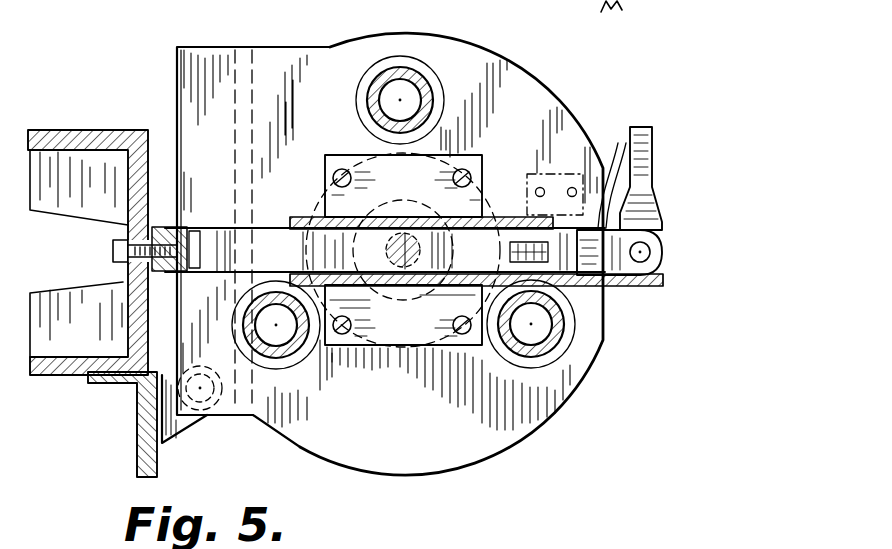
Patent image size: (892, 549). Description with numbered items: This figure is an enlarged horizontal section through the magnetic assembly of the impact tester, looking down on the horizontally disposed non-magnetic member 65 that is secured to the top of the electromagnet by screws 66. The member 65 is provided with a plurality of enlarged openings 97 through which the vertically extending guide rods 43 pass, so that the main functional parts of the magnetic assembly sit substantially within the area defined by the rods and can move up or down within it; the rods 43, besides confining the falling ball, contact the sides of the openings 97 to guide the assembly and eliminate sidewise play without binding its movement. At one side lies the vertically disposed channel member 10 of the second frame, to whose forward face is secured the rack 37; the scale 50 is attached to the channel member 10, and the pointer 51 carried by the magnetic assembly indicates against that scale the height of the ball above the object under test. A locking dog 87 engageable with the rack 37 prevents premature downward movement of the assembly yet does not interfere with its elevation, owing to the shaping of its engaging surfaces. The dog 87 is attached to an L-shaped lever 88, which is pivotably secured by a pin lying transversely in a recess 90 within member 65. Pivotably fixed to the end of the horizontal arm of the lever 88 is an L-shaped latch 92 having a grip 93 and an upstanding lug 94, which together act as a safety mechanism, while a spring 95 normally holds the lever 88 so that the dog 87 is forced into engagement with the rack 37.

The channel member 10 is at (97, 132).
The rack 37 is at (113, 240).
The guide rods 43 is at (413, 73).
The scale 50 is at (158, 468).
The pointer 51 is at (188, 430).
The non-magnetic member 65 is at (568, 426).
The screws 66 is at (398, 288).
The locking dog 87 is at (200, 228).
The L-shaped lever 88 is at (264, 240).
The recess 90 is at (210, 228).
The clevis 92 is at (662, 222).
The grip 93 is at (650, 162).
The upstanding lug 94 is at (599, 170).
The spring 95 is at (508, 250).
The enlarged openings 97 is at (437, 78).